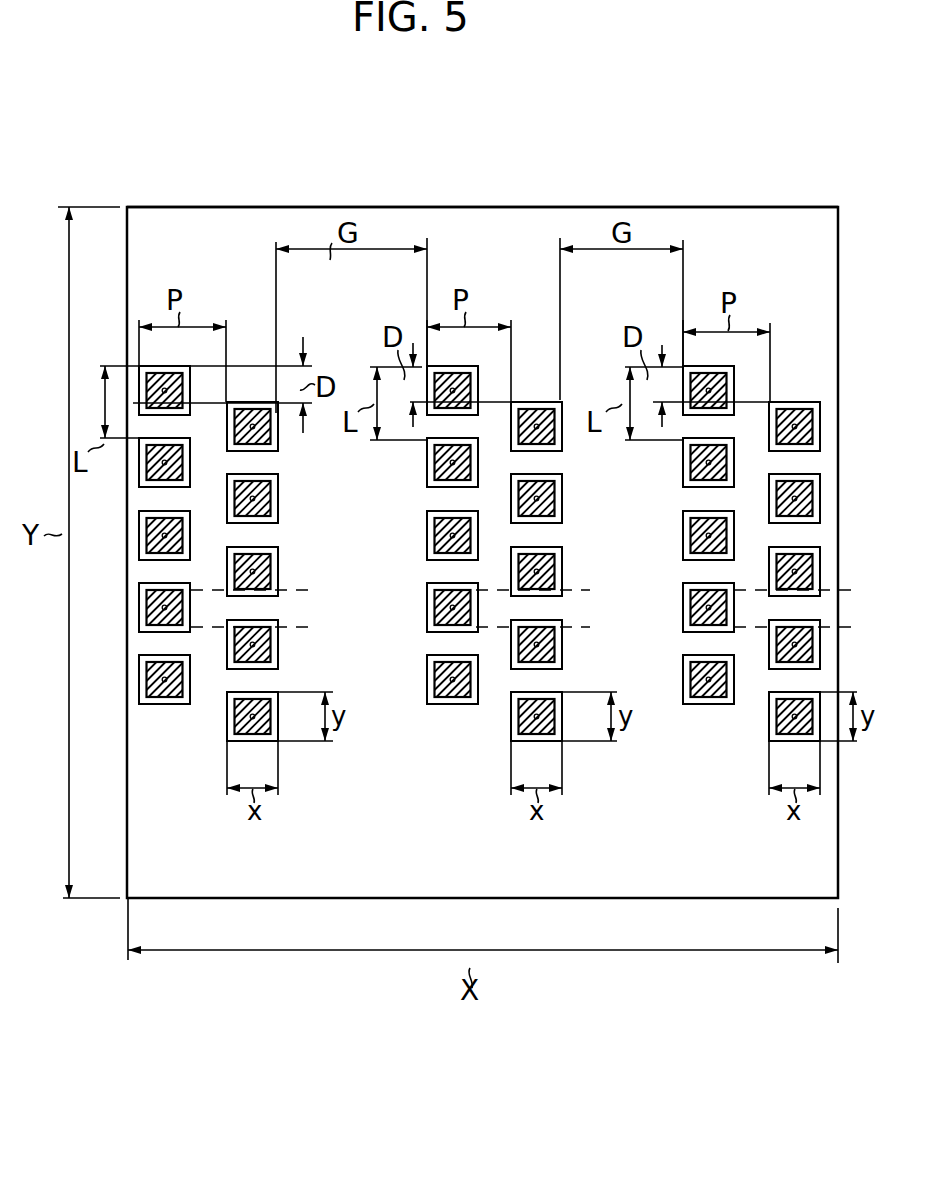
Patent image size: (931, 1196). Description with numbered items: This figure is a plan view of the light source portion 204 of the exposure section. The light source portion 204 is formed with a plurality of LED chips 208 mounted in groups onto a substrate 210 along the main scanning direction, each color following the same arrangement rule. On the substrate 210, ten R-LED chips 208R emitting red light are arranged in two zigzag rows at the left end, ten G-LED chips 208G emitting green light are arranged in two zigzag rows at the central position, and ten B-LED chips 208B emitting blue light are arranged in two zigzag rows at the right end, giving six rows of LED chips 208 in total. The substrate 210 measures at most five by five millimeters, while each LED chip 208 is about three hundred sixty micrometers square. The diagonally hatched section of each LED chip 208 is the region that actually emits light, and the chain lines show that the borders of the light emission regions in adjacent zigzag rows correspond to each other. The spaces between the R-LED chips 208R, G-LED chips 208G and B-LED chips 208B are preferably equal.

The light source portion 204 is at (249, 183).
The substrate 210 is at (573, 223).
The LED chips 208 is at (479, 628).
The R-LED chip 208R is at (277, 523).
The G-LED chip 208G is at (430, 633).
The B-LED chip 208B is at (712, 603).